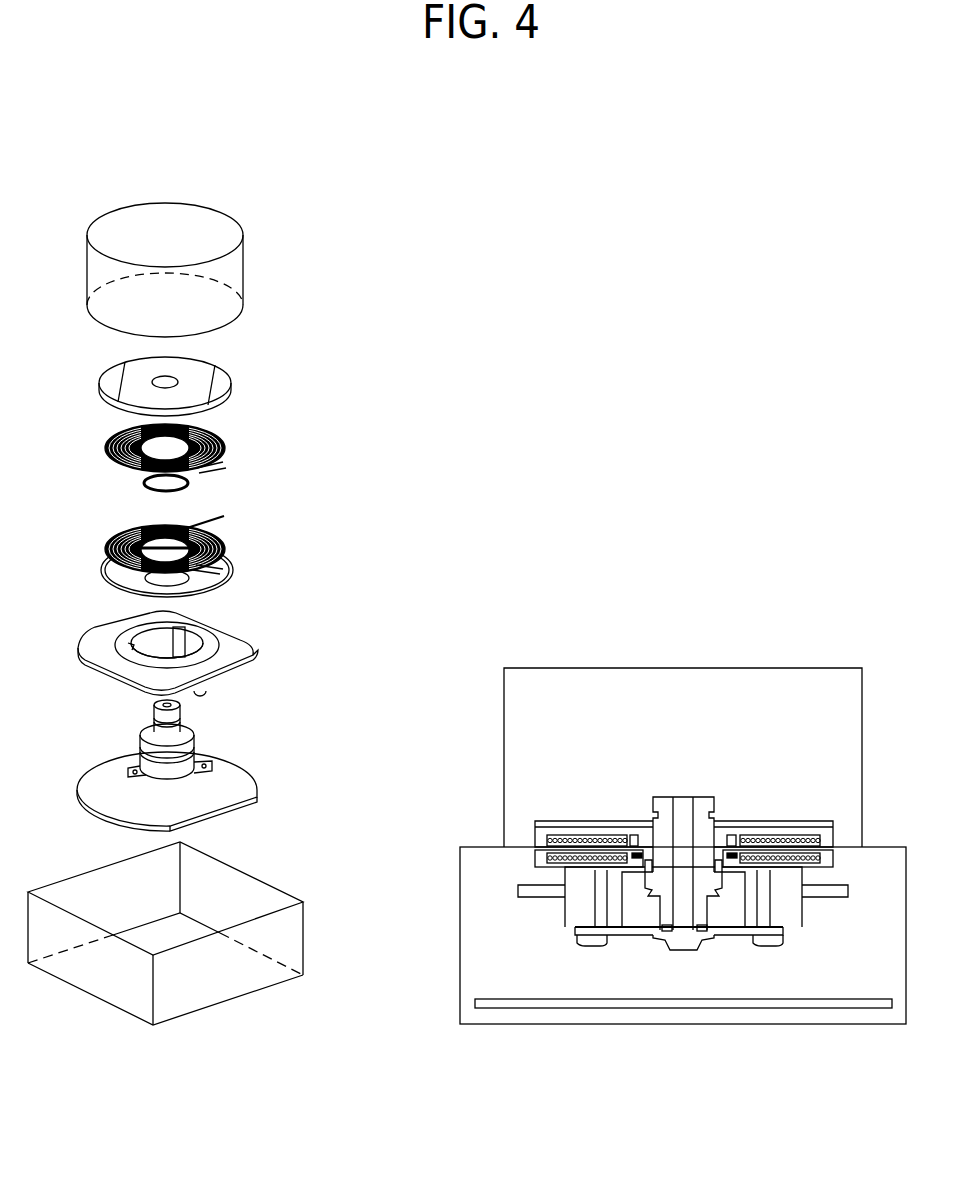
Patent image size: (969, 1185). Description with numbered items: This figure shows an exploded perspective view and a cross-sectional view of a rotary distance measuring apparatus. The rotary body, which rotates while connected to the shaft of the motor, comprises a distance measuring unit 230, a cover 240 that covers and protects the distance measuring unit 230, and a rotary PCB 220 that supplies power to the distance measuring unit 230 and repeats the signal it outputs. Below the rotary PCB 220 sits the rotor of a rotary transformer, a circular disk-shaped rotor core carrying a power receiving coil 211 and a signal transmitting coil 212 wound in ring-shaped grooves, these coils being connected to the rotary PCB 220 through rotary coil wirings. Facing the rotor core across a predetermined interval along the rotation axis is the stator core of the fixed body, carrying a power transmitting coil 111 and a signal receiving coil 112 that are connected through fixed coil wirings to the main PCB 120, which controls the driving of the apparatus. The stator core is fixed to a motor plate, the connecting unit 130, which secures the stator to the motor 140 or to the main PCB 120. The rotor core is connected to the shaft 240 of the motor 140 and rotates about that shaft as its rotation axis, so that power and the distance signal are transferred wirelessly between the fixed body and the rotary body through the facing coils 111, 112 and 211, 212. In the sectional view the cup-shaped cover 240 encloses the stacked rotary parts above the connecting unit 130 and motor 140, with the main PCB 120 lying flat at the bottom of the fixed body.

The distance measuring unit 230 is at (221, 190).
The cover 240 is at (236, 270).
The rotary PCB 220 is at (203, 380).
The power receiving coil 211 is at (462, 636).
The signal transmitting coil 212 is at (222, 450).
The power transmitting coil 111 is at (467, 699).
The signal receiving coil 112 is at (222, 545).
The connecting unit 130 is at (232, 652).
The motor 140 is at (178, 752).
The main PCB 120 is at (232, 787).